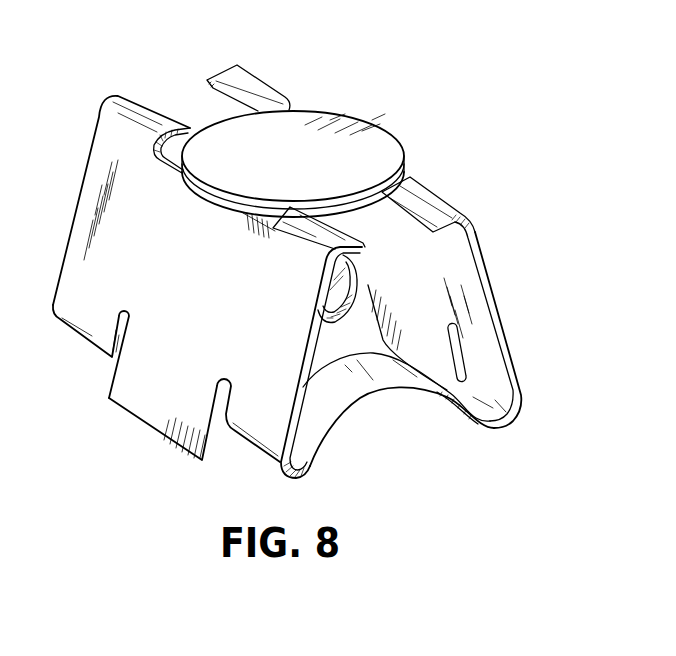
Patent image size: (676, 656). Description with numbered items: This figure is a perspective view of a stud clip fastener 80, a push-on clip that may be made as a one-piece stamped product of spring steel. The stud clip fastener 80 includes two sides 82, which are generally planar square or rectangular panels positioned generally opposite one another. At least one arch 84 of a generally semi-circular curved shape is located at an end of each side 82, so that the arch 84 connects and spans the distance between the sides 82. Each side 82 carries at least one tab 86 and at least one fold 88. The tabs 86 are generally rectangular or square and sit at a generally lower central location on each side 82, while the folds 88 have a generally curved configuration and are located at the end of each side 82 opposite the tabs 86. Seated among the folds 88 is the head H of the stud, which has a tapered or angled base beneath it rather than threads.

The stud clip fastener 80 is at (511, 150).
The side 82 is at (82, 232).
The arch 84 is at (350, 390).
The tab 86 is at (155, 402).
The fold 88 is at (140, 95).
The head H is at (289, 138).